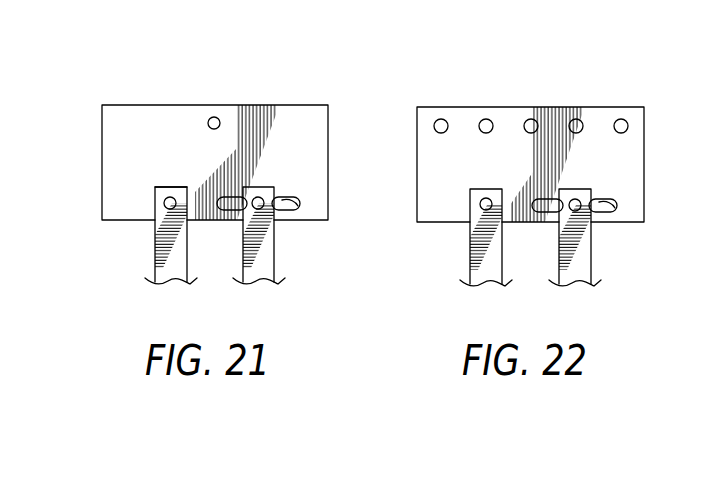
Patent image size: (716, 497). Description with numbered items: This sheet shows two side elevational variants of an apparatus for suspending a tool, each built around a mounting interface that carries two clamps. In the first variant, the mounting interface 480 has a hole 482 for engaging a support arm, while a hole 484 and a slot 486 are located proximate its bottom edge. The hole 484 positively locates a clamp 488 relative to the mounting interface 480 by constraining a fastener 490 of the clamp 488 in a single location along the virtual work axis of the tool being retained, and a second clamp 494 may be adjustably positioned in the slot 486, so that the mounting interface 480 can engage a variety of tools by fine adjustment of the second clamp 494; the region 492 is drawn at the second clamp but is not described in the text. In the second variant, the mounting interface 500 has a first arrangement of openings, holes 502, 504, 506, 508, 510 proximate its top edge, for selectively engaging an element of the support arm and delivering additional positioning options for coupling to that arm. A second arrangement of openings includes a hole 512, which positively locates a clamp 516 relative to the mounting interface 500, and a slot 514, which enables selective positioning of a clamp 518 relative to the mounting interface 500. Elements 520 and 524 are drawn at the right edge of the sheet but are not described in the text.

In FIG. 21, the mounting interface 480 is at (258, 97).
In FIG. 21, the hole 482 is at (217, 127).
In FIG. 21, the hole 484 is at (167, 197).
In FIG. 21, the slot 486 is at (300, 205).
In FIG. 21, the clamp 488 is at (160, 267).
In FIG. 21, the fastener 490 is at (166, 204).
In FIG. 21, the second tab hole 492 is at (258, 207).
In FIG. 21, the second clamp 494 is at (275, 256).
In FIG. 22, the mounting interface 500 is at (415, 128).
In FIG. 22, the hole 502 is at (441, 119).
In FIG. 22, the hole 504 is at (486, 119).
In FIG. 22, the hole 506 is at (531, 119).
In FIG. 22, the hole 508 is at (576, 119).
In FIG. 22, the hole 510 is at (621, 119).
In FIG. 22, the hole 512 is at (483, 207).
In FIG. 22, the slot 514 is at (617, 209).
In FIG. 22, the clamp 516 is at (481, 282).
In FIG. 22, the clamp 518 is at (592, 258).
In FIG. 22, the adjacent assembly 520 is at (714, 126).
In FIG. 22, the adjacent element 524 is at (715, 230).